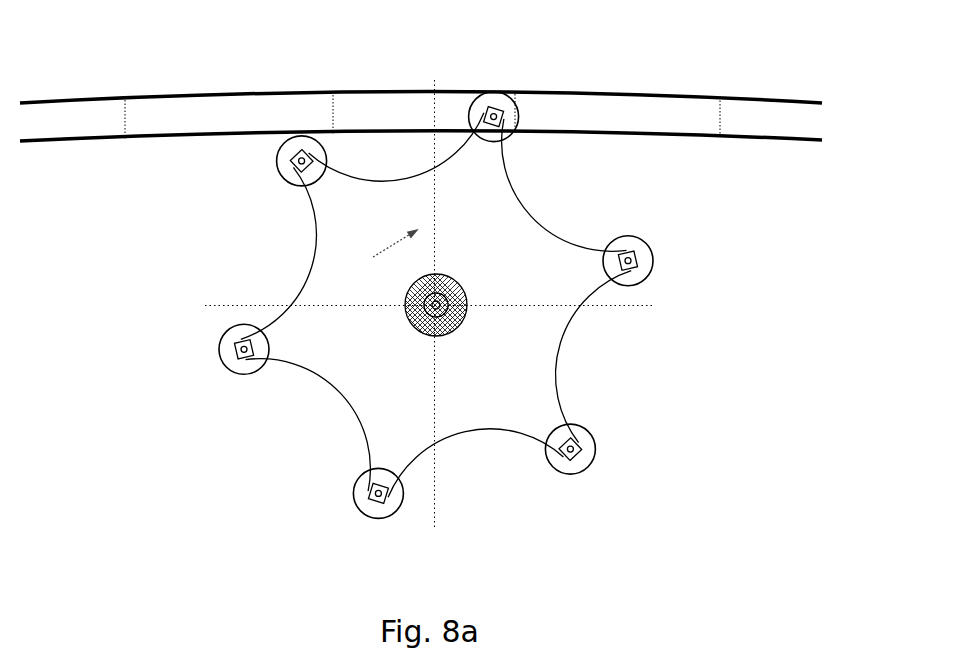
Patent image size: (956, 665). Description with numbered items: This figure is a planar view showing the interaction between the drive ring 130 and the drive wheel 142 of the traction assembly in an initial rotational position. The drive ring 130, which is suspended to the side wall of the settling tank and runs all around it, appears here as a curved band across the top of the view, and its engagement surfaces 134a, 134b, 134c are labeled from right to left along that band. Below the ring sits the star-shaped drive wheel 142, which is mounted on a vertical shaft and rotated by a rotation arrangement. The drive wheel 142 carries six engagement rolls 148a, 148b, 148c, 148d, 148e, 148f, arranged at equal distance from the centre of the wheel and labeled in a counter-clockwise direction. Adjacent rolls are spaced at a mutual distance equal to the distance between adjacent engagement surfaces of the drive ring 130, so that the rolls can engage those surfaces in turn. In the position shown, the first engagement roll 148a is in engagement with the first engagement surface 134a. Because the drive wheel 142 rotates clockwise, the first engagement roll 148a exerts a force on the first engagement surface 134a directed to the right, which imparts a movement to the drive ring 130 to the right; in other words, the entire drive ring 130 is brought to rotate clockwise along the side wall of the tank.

The drive ring 130 is at (763, 147).
The first engagement surface 134a is at (523, 101).
The engagement surface 134b is at (330, 100).
The engagement surface 134c is at (128, 107).
The drive wheel 142 is at (364, 360).
The first engagement roll 148a is at (518, 142).
The engagement roll 148b is at (266, 185).
The engagement roll 148c is at (218, 384).
The engagement roll 148d is at (346, 526).
The engagement roll 148e is at (553, 490).
The engagement roll 148f is at (647, 299).